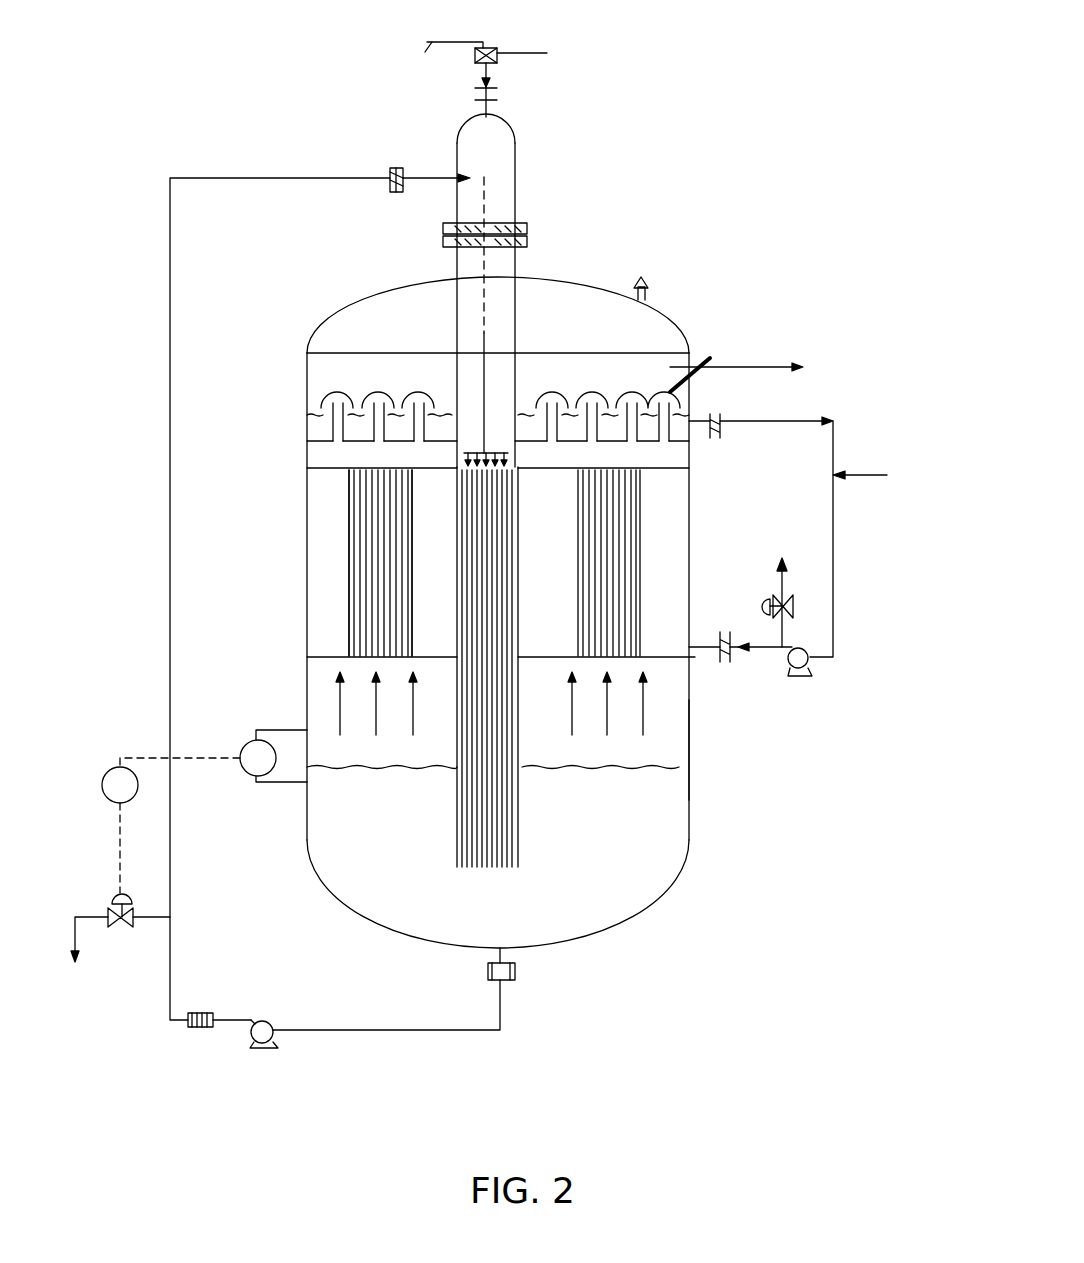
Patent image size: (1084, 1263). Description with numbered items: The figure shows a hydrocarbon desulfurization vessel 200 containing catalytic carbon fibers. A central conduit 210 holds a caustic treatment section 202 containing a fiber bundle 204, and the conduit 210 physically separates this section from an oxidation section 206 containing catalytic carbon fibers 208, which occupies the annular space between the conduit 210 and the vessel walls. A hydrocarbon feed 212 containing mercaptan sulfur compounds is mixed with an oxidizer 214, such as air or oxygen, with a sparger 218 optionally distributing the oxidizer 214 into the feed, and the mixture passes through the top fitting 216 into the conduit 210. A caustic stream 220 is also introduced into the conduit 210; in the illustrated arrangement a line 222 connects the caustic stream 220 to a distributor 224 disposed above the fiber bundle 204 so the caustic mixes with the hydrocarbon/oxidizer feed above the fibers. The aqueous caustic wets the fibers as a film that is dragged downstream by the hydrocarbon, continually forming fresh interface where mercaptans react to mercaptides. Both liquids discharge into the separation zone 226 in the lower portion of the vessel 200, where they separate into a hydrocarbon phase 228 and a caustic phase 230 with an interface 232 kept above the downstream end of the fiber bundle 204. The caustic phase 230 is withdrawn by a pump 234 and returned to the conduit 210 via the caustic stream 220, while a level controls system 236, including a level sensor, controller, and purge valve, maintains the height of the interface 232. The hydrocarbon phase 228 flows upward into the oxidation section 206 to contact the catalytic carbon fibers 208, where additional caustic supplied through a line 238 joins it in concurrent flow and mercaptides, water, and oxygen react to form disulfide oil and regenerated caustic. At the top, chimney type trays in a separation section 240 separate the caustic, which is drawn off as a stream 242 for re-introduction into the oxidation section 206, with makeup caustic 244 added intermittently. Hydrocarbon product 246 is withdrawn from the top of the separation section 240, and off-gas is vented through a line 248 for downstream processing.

The hydrocarbon desulfurization vessel 200 is at (848, 200).
The caustic treatment section 202 is at (522, 620).
The fiber bundle 204 is at (490, 552).
The oxidation section 206 is at (307, 634).
The catalytic carbon fibers 208 is at (349, 561).
The conduit 210 is at (517, 258).
The hydrocarbon feed 212 is at (449, 64).
The oxidizer 214 is at (525, 53).
The top nozzle 216 is at (487, 108).
The sparger 218 is at (488, 48).
The caustic stream 220 is at (322, 174).
The line 222 is at (487, 197).
The distributor 224 is at (508, 460).
The separation zone 226 is at (693, 738).
The hydrocarbon phase 228 is at (318, 693).
The caustic phase 230 is at (673, 816).
The interface 232 is at (588, 768).
The pump 234 is at (262, 1047).
The level controls system 236 is at (247, 743).
The line 238 is at (773, 653).
The separation section 240 is at (525, 386).
The stream 242 is at (762, 423).
The makeup caustic 244 is at (863, 477).
The hydrocarbon product 246 is at (748, 365).
The line 248 is at (648, 278).